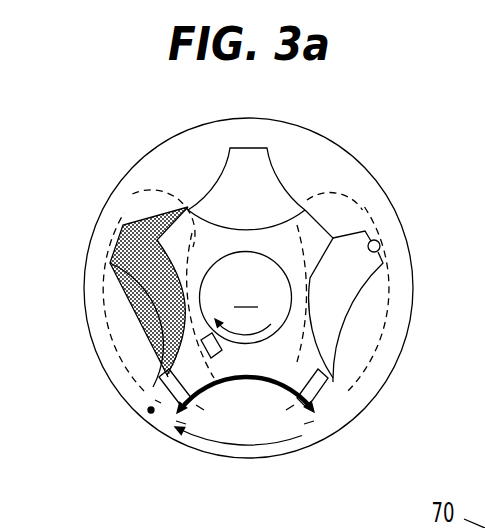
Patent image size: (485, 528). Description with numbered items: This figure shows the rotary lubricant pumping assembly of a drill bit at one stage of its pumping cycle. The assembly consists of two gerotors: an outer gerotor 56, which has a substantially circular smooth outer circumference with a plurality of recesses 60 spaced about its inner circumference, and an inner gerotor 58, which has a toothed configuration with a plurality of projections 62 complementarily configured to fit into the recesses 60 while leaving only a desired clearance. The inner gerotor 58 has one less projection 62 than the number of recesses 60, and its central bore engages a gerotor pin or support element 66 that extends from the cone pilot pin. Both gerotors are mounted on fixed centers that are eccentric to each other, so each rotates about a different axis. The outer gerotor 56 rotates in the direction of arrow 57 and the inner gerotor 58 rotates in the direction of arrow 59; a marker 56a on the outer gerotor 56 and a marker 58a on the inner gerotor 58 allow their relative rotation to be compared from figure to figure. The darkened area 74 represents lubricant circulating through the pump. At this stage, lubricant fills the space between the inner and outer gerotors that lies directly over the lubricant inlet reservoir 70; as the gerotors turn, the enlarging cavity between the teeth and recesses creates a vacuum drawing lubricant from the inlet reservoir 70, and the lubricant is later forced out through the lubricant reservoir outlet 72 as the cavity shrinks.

The outer gerotor 56 is at (338, 162).
The marker on the outer gerotor 56a is at (149, 412).
The arrow 57 is at (263, 447).
The inner gerotor 58 is at (221, 227).
The marker on the inner gerotor 58a is at (183, 375).
The arrow 59 is at (222, 340).
The recesses 60 is at (252, 160).
The projections 62 is at (322, 393).
The gerotor pin or support element 66 is at (246, 298).
The lubricant inlet reservoir 70 is at (124, 203).
The lubricant reservoir outlet 72 is at (368, 183).
The darkened area 74 is at (110, 263).